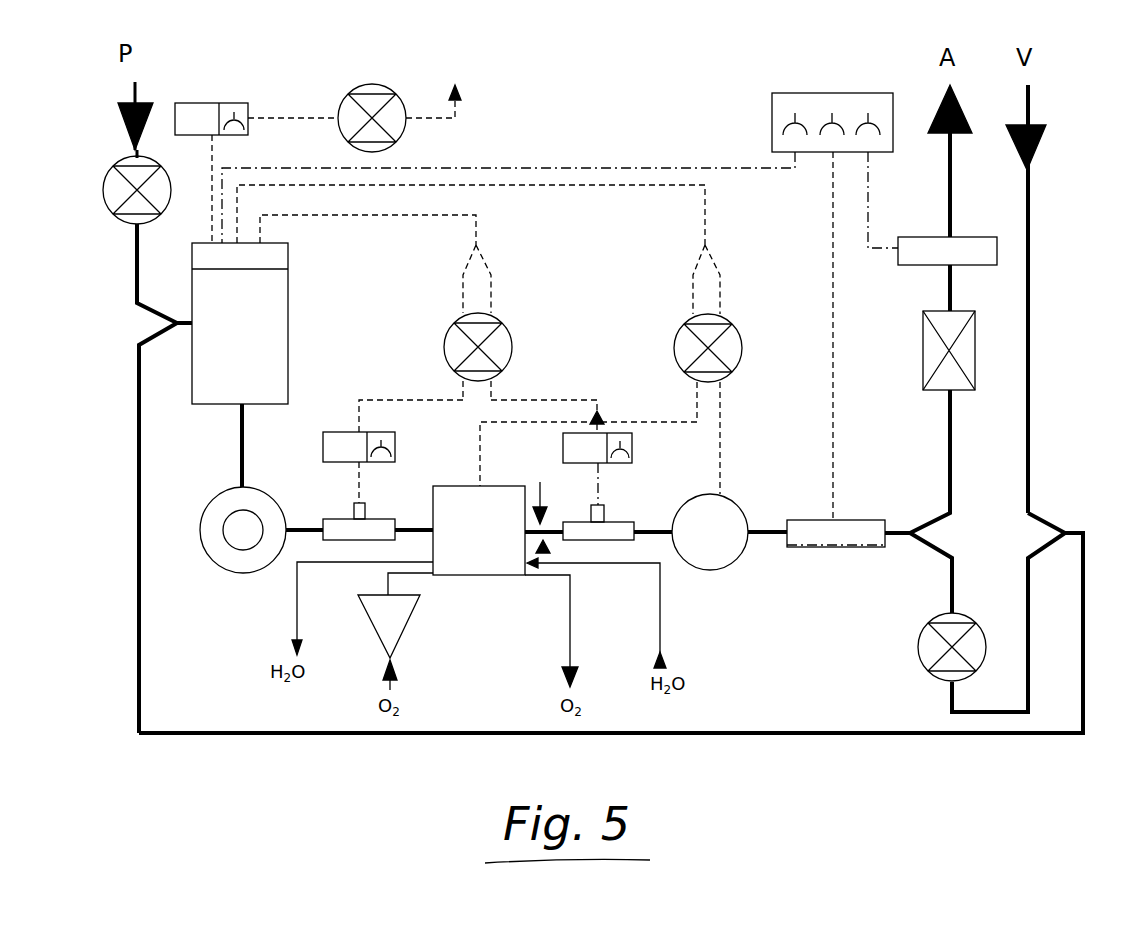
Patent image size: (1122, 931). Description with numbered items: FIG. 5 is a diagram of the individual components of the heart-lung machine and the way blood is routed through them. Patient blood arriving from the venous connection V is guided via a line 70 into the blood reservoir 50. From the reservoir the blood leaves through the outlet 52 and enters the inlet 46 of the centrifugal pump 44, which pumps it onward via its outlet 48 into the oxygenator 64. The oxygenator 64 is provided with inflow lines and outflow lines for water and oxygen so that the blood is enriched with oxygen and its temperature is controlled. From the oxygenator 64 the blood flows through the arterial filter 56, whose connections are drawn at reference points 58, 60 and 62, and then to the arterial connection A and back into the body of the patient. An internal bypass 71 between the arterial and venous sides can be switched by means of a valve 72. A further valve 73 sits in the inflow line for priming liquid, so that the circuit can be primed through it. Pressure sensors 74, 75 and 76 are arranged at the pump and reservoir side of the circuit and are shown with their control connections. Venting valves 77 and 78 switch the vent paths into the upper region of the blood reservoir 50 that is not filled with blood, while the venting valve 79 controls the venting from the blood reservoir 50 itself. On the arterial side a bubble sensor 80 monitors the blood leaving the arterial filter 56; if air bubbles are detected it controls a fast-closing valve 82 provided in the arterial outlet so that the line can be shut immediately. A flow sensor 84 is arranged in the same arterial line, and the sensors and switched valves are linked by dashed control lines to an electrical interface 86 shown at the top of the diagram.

The centrifugal pump 44 is at (228, 565).
The inlet 46 is at (247, 485).
The outlet 48 is at (288, 527).
The blood reservoir 50 is at (262, 351).
The outlet 52 is at (237, 410).
The arterial filter 56 is at (728, 549).
The second pump inlet line 58 is at (670, 525).
The second pump outlet line 60 is at (752, 530).
The pump housing 62 is at (720, 494).
The oxygenator 64 is at (490, 552).
The line 70 is at (857, 735).
The internal bypass 71 is at (995, 710).
The valve 72 is at (930, 650).
The valve 73 is at (118, 190).
The pressure sensor 74 is at (343, 445).
The pressure sensor 75 is at (563, 447).
The pressure sensor 76 is at (200, 115).
The venting valve 77 is at (500, 345).
The venting valve 78 is at (727, 345).
The venting valve 79 is at (392, 112).
The bubble sensor 80 is at (855, 520).
The fast-closing valve 82 is at (935, 352).
The flow sensor 84 is at (918, 250).
The electrical interface 86 is at (850, 105).